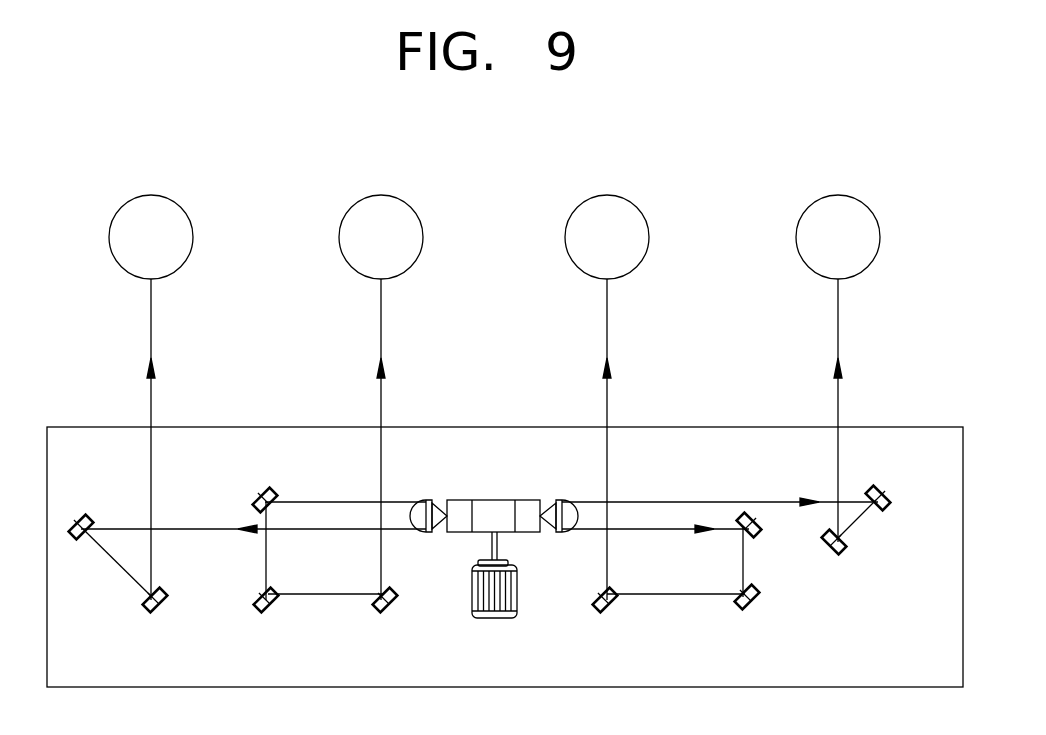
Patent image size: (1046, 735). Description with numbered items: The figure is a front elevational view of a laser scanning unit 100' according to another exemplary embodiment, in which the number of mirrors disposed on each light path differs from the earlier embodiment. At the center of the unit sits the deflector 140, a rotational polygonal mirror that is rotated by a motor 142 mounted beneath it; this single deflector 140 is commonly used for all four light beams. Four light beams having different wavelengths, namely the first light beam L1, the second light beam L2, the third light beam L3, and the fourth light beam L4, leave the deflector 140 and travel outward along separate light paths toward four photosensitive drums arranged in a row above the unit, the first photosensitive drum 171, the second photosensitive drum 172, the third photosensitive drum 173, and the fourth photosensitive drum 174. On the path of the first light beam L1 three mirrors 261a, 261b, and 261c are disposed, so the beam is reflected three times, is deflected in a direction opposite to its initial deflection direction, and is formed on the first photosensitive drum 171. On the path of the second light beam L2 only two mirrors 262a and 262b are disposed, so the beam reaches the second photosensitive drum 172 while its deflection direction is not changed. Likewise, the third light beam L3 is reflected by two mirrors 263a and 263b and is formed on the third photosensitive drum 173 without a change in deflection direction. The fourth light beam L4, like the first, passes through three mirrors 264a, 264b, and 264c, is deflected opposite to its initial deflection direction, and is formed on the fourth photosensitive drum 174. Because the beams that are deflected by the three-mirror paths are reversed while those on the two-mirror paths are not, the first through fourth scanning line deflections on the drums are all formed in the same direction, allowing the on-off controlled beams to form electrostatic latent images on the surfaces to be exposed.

The laser scanning unit 100' is at (505, 523).
The first photosensitive drum 171 is at (607, 195).
The second photosensitive drum 172 is at (838, 195).
The third photosensitive drum 173 is at (151, 195).
The fourth photosensitive drum 174 is at (381, 195).
The deflector 140 is at (492, 500).
The motor 142 is at (494, 619).
The mirror 261a is at (755, 537).
The mirror 261b is at (745, 608).
The mirror 261c is at (606, 611).
The mirror 262a is at (884, 509).
The mirror 262b is at (835, 555).
The mirror 263a is at (84, 512).
The mirror 263b is at (153, 612).
The mirror 264a is at (267, 488).
The mirror 264b is at (267, 612).
The mirror 264c is at (383, 611).
The first light beam L1 is at (676, 531).
The second light beam L2 is at (766, 500).
The third light beam L3 is at (211, 532).
The fourth light beam L4 is at (333, 514).